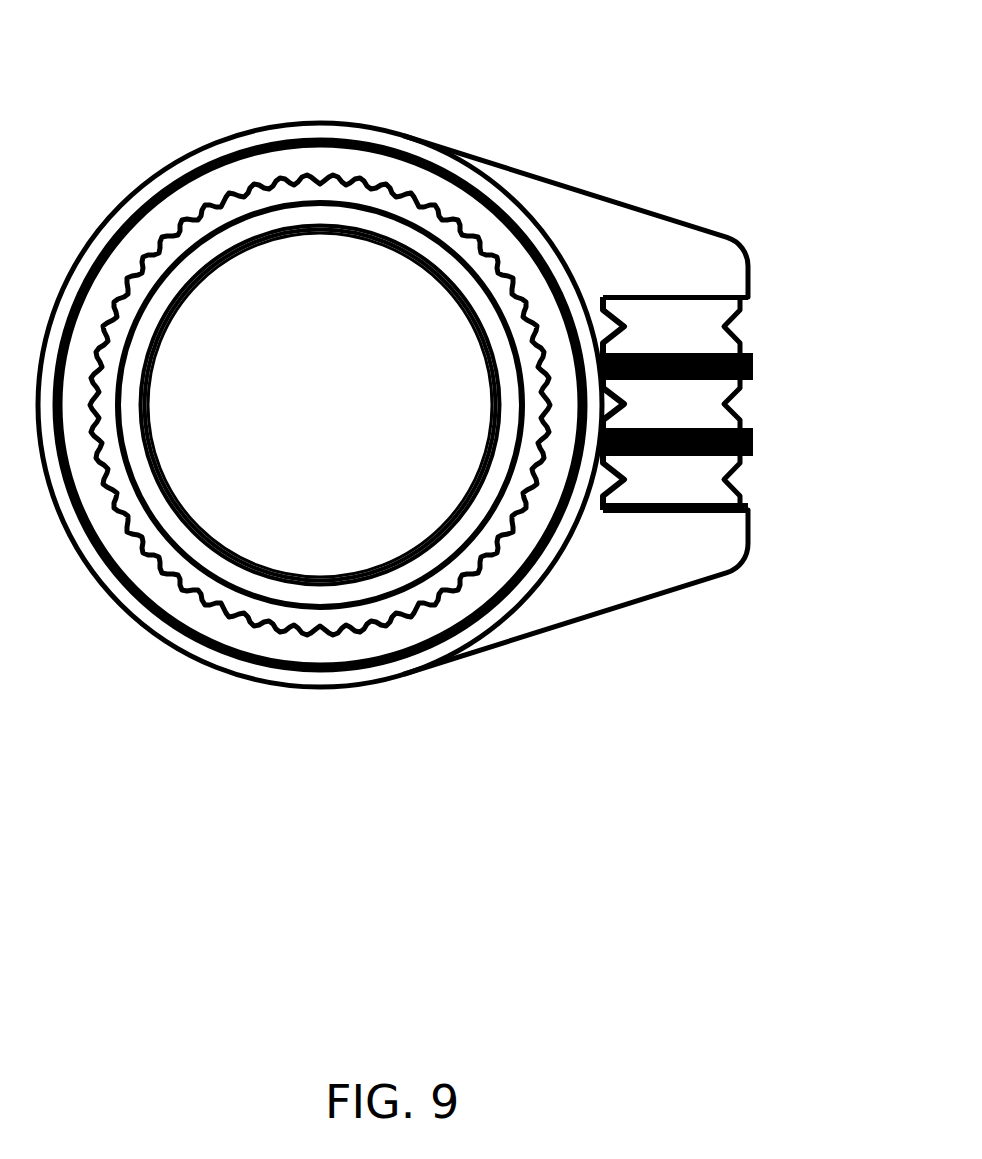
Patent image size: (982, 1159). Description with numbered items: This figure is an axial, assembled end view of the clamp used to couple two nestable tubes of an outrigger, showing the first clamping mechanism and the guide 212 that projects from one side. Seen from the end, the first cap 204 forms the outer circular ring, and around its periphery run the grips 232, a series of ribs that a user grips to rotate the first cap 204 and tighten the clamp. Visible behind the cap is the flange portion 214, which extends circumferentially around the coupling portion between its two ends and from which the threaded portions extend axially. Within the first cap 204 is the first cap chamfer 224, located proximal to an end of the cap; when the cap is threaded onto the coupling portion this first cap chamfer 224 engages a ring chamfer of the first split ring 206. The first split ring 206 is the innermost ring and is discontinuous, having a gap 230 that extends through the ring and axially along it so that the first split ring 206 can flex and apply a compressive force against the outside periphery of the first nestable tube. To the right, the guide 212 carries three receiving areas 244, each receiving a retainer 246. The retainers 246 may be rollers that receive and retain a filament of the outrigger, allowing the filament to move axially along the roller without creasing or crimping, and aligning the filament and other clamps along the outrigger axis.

The guide 212 is at (173, 157).
The flange portion 214 is at (255, 170).
The grips 232 is at (367, 175).
The first cap 204 is at (438, 220).
The first cap chamfer 224 is at (292, 215).
The gap 230 is at (150, 448).
The first split ring 206 is at (208, 533).
The receiving areas 244 is at (612, 403).
The retainer 246 is at (695, 472).